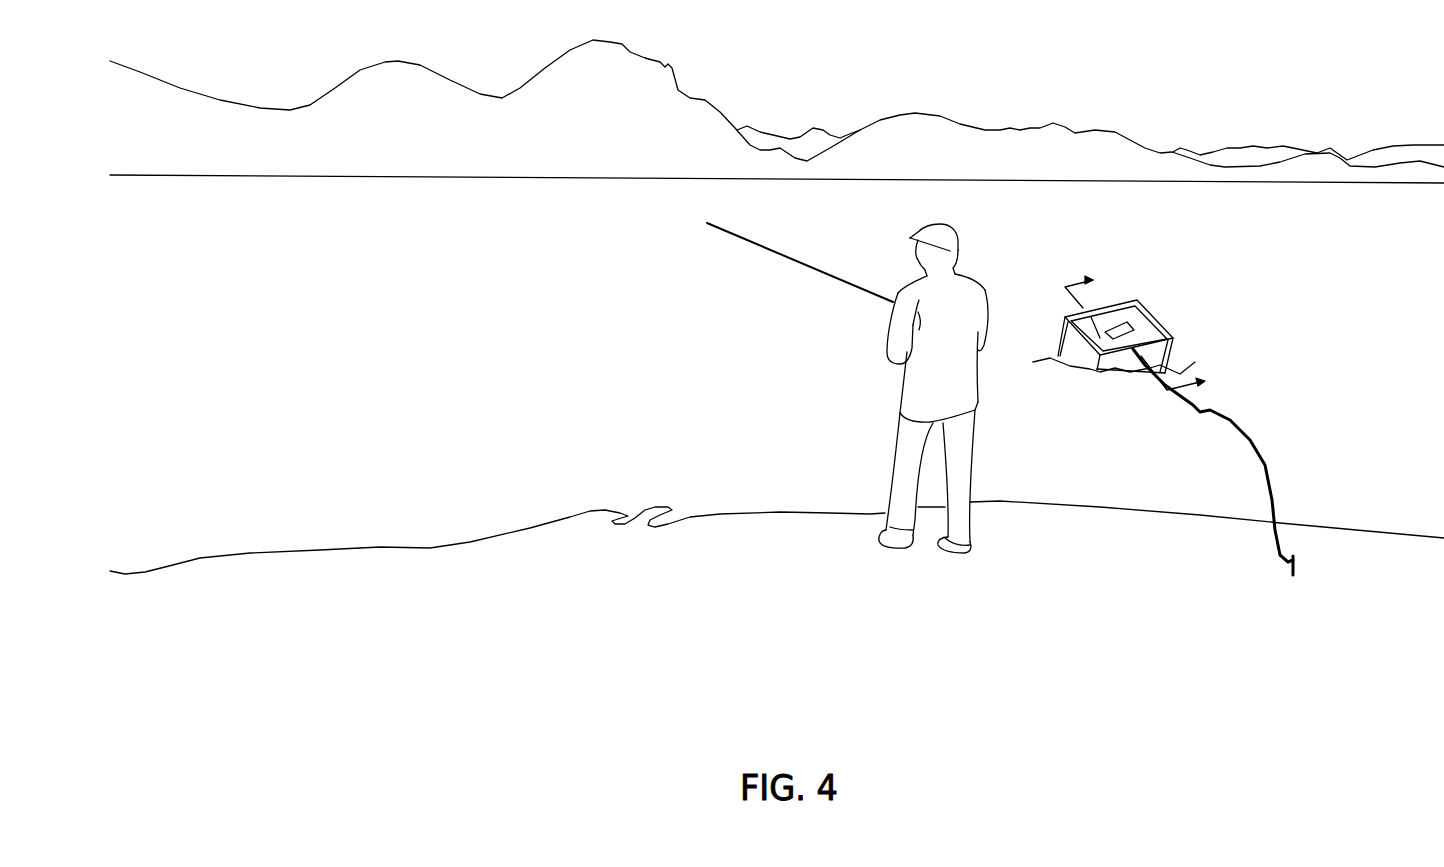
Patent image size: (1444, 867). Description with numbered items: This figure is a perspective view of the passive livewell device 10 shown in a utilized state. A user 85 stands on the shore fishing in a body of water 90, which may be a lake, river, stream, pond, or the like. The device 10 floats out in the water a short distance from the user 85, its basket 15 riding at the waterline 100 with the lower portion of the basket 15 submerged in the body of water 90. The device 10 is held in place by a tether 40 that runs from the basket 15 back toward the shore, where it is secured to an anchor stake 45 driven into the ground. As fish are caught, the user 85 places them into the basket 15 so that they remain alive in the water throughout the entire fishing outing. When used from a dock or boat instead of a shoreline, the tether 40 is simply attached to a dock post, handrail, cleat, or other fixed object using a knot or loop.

The passive livewell 10 is at (1119, 223).
The basket 15 is at (1140, 320).
The tether 40 is at (1244, 428).
The anchor stake 45 is at (1294, 559).
The user 85 is at (946, 300).
The body of water 90 is at (510, 309).
The waterline 100 is at (1141, 214).